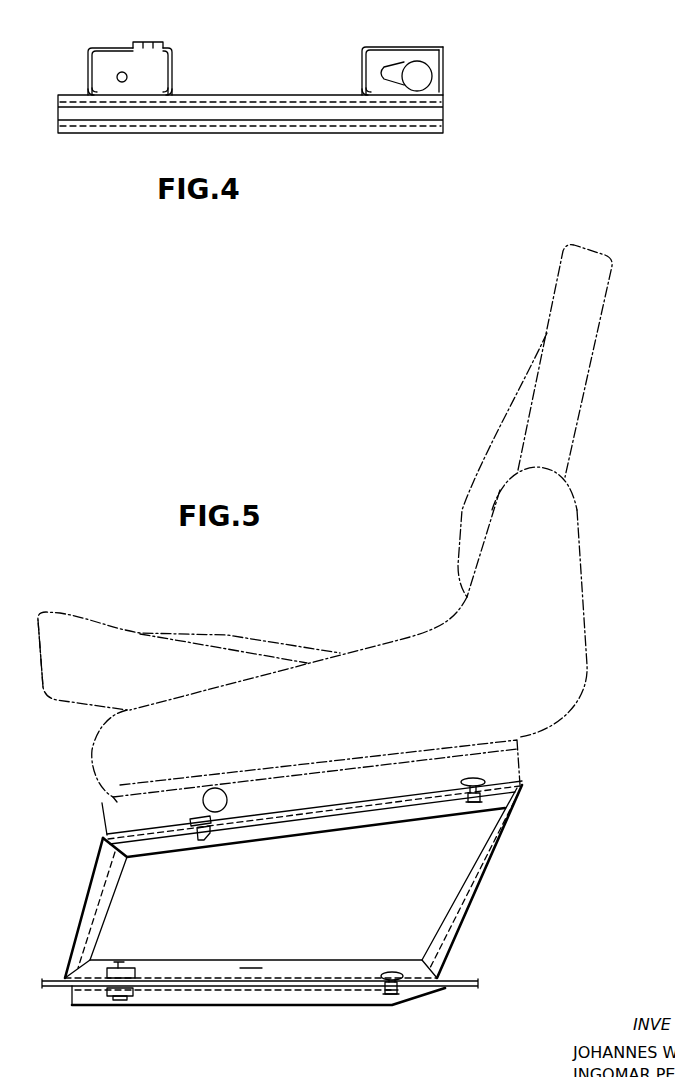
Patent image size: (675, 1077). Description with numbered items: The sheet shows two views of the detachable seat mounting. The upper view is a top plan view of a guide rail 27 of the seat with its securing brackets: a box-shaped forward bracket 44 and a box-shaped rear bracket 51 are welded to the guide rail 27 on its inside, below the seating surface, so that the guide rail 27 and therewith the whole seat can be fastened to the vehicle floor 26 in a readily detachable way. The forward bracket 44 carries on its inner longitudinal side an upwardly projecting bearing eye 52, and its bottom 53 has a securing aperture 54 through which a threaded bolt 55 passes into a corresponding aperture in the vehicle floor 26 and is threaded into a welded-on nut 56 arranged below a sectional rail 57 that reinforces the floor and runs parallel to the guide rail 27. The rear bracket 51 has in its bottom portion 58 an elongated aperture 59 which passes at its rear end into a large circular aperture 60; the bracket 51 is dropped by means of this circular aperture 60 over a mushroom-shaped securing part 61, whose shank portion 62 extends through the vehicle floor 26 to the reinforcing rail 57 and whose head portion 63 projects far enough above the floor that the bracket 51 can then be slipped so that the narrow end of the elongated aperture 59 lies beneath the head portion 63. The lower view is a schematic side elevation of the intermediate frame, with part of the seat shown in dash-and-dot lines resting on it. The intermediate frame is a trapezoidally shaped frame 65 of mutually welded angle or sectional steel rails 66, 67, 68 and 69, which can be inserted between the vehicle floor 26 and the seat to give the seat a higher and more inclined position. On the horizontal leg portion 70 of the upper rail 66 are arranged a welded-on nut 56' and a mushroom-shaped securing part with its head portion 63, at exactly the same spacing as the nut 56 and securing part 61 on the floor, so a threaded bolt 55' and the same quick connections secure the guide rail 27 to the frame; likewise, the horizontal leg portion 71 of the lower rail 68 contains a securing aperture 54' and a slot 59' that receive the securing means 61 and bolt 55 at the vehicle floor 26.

In FIG. 5, the vehicle floor 26 is at (462, 988).
In FIG. 4, the guide rail 27 is at (258, 107).
In FIG. 4, the forward bracket 44 is at (173, 82).
In FIG. 4, the rear bracket 51 is at (443, 82).
In FIG. 4, the bearing eye 52 is at (151, 42).
In FIG. 4, the bottom of forward bracket 53 is at (110, 57).
In FIG. 4, the securing aperture 54 is at (136, 70).
In FIG. 5, the securing aperture 54' is at (131, 954).
In FIG. 5, the threaded bolt 55 is at (122, 1017).
In FIG. 5, the threaded bolt 55' is at (179, 811).
In FIG. 5, the welded-on nut 56 is at (99, 1021).
In FIG. 5, the welded-on nut 56' is at (212, 854).
In FIG. 5, the sectional rail 57 is at (215, 1000).
In FIG. 4, the bottom portion of rear bracket 58 is at (375, 56).
In FIG. 4, the elongated aperture 59 is at (402, 52).
In FIG. 5, the slot 59' is at (365, 1015).
In FIG. 4, the circular aperture 60 is at (422, 62).
In FIG. 5, the mushroom-shaped securing part 61 is at (466, 800).
In FIG. 5, the shank portion 62 is at (488, 797).
In FIG. 5, the head portion 63 is at (468, 778).
In FIG. 5, the trapezoidally shaped frame 65 is at (500, 853).
In FIG. 5, the upper sectional rail 66 is at (275, 828).
In FIG. 5, the sectional rail 67 is at (105, 900).
In FIG. 5, the lower sectional rail 68 is at (250, 968).
In FIG. 5, the sectional rail 69 is at (475, 860).
In FIG. 5, the horizontal leg portion of upper rail 70 is at (340, 812).
In FIG. 5, the horizontal leg portion of lower rail 71 is at (205, 975).